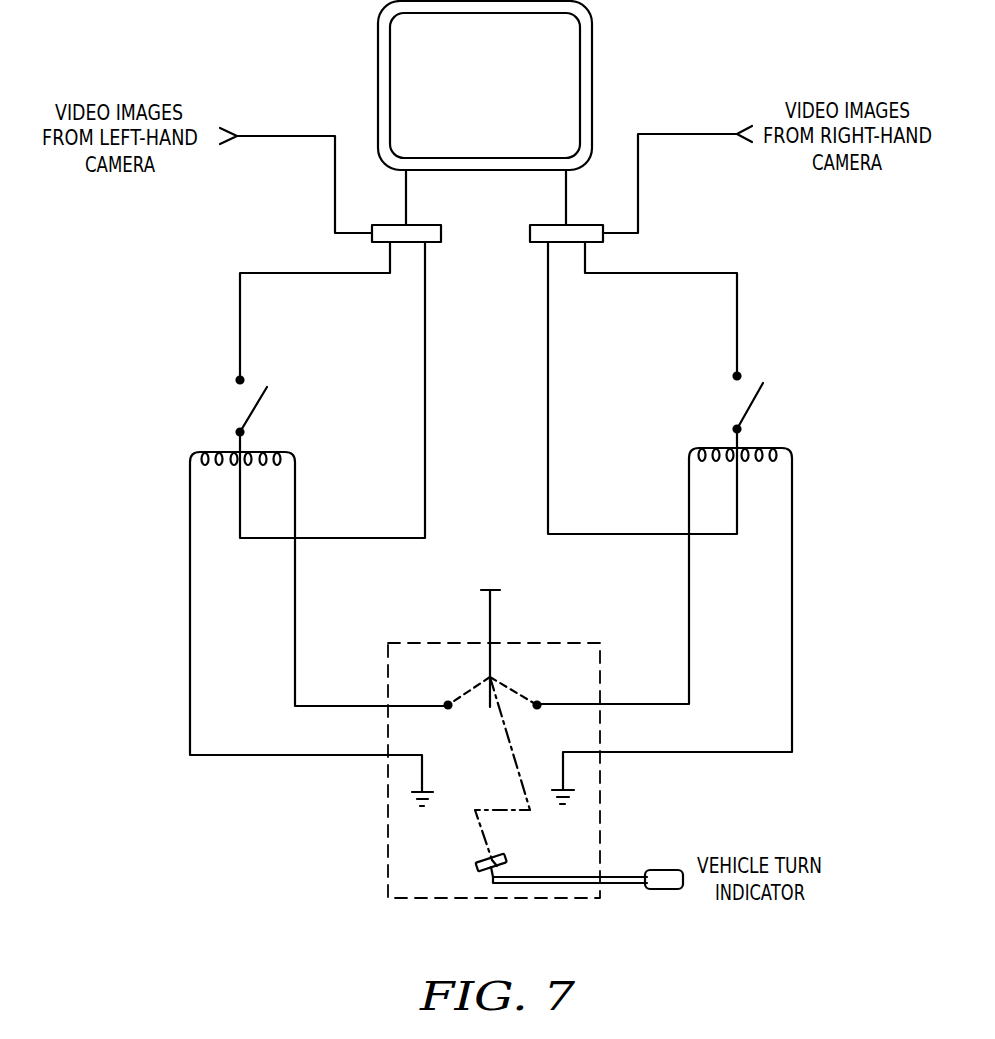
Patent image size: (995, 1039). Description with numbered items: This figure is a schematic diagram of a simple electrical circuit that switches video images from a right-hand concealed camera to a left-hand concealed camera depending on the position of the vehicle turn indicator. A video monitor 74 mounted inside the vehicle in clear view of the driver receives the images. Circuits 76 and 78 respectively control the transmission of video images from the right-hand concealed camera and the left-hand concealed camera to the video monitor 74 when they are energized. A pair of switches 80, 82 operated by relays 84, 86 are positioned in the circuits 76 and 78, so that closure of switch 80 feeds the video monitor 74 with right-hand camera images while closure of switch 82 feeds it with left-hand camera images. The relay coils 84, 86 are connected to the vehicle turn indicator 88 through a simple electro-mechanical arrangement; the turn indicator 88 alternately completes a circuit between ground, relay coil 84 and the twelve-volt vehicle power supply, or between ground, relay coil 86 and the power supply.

The video monitor 74 is at (558, 52).
The circuit 76 is at (529, 233).
The circuit 78 is at (432, 243).
The switch 80 is at (757, 400).
The switch 82 is at (232, 418).
The relay coil 84 is at (757, 460).
The relay coil 86 is at (219, 465).
The vehicle turn indicator 88 is at (433, 868).